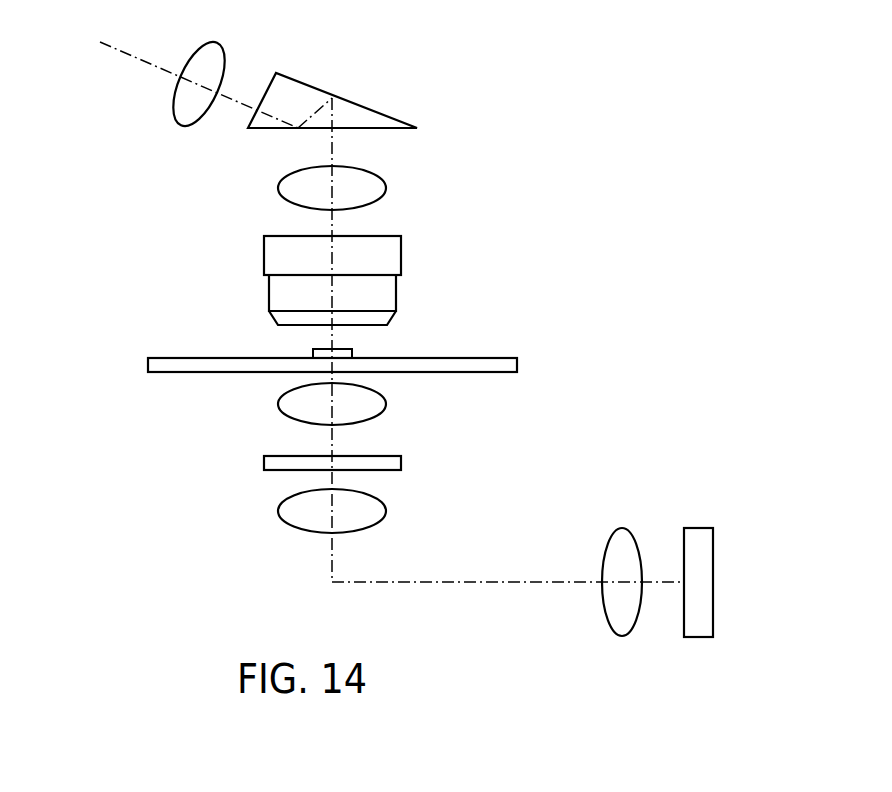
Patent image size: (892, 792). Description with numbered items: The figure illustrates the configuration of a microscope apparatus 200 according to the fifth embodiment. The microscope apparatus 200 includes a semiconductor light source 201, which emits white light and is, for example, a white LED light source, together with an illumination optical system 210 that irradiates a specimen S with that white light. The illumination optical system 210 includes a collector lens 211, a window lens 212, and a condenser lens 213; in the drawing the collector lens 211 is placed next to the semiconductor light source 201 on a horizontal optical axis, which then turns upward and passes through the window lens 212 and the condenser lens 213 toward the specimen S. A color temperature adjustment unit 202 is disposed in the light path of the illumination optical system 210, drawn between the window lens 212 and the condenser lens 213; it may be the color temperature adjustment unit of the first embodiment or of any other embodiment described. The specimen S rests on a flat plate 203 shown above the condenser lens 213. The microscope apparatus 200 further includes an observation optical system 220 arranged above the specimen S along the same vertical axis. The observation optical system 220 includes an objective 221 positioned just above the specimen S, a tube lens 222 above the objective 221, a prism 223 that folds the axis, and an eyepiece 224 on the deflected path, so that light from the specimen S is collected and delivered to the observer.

The microscope apparatus 200 is at (737, 58).
The observation optical system 220 is at (527, 202).
The eyepiece 224 is at (225, 62).
The prism 223 is at (365, 103).
The tube lens 222 is at (386, 190).
The objective 221 is at (401, 285).
The specimen S is at (352, 353).
The stage 203 is at (517, 365).
The illumination optical system 210 is at (223, 493).
The condenser lens 213 is at (387, 403).
The color temperature adjustment unit 202 is at (401, 466).
The window lens 212 is at (387, 512).
The collector lens 211 is at (620, 528).
The semiconductor light source 201 is at (698, 528).